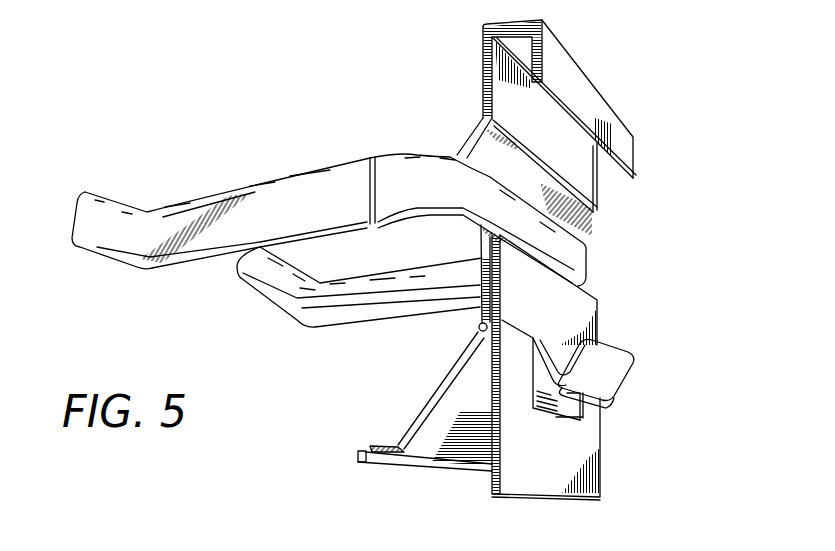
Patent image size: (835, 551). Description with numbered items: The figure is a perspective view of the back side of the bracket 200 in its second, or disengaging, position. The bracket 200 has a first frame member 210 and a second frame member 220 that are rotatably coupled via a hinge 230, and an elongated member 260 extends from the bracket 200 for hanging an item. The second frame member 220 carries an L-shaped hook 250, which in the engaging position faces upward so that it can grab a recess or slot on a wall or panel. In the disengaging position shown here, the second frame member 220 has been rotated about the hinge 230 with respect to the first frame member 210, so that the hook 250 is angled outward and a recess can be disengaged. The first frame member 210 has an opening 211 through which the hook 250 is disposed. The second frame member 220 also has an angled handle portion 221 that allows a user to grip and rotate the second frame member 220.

The bracket 200 is at (156, 116).
The first frame member 210 is at (606, 305).
The opening 211 is at (584, 414).
The second frame member 220 is at (404, 470).
The angled handle portion 221 is at (364, 448).
The hinge 230 is at (478, 331).
The L-shaped hook 250 is at (616, 368).
The elongated member 260 is at (94, 226).